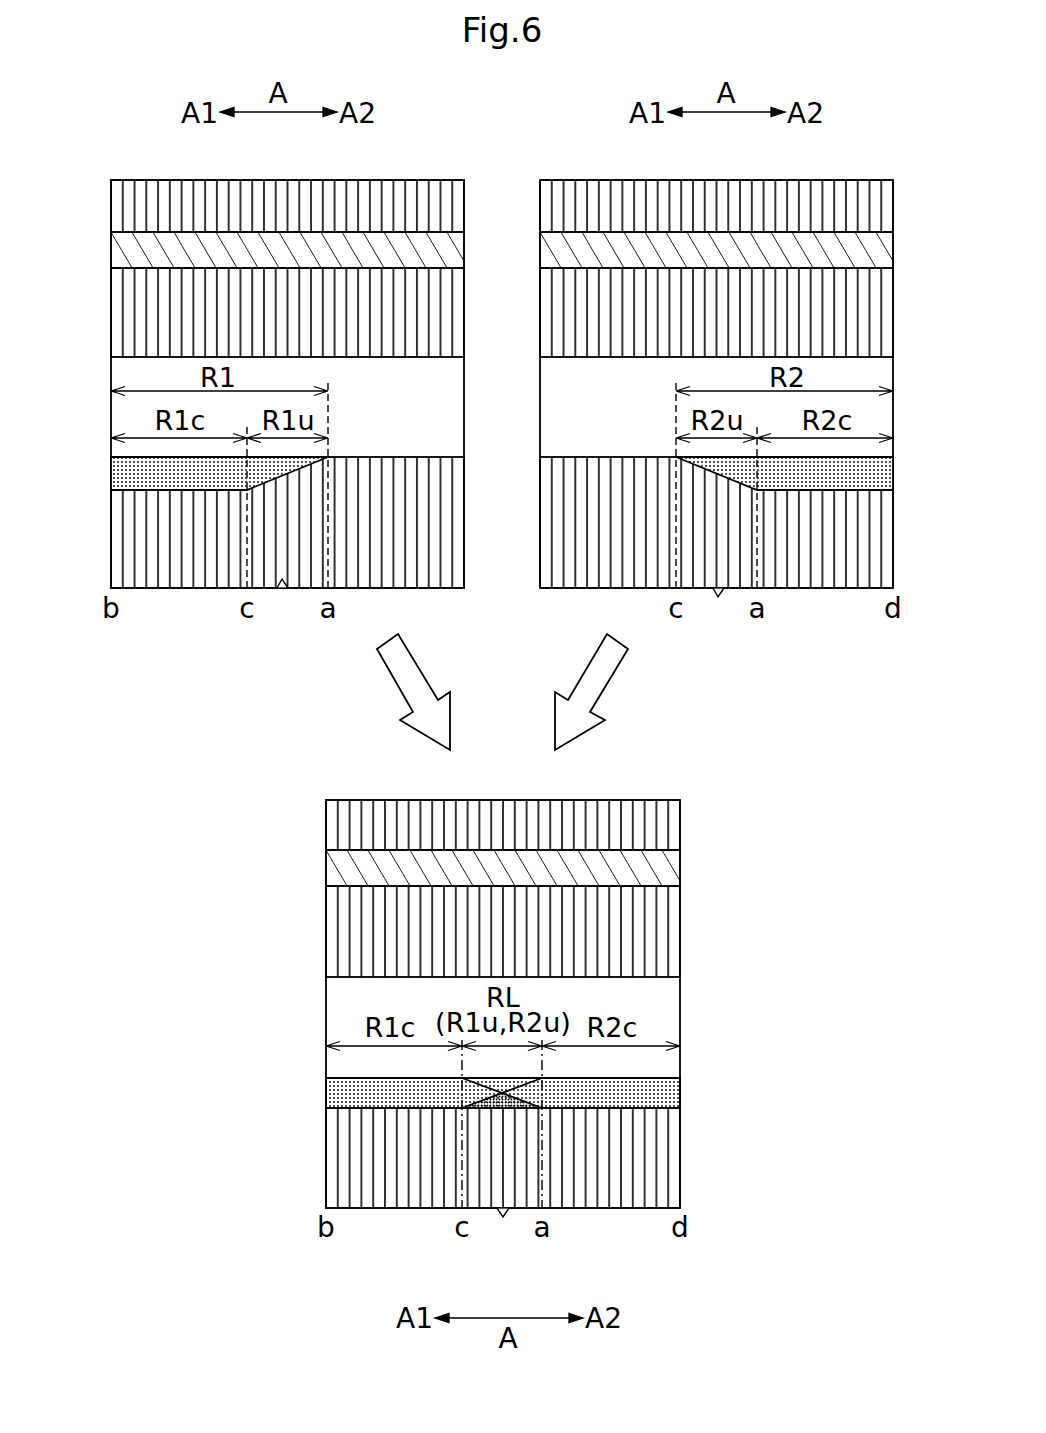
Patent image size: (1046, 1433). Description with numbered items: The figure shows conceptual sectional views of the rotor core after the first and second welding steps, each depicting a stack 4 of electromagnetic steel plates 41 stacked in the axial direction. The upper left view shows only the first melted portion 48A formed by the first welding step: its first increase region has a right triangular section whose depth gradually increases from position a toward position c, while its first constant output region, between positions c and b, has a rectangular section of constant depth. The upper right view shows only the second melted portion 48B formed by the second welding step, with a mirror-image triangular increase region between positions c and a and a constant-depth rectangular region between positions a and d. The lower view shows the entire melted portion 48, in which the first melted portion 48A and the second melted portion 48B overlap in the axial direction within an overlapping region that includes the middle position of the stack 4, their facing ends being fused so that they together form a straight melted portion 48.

The stack 4 is at (90, 185).
The electromagnetic steel plate 41 is at (162, 588).
The melted portion 48 is at (680, 1093).
The first melted portion 48A is at (112, 472).
The second melted portion 48B is at (887, 472).